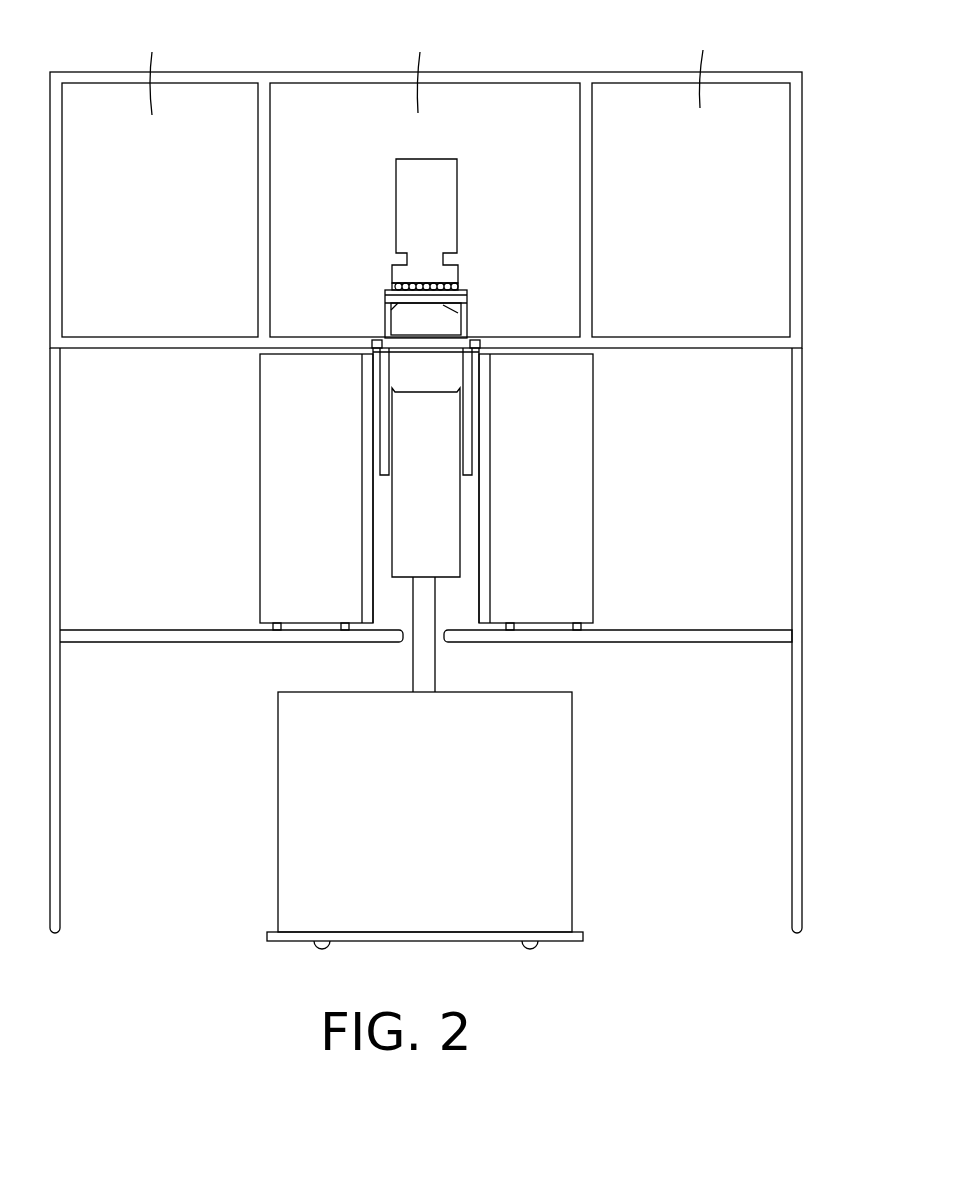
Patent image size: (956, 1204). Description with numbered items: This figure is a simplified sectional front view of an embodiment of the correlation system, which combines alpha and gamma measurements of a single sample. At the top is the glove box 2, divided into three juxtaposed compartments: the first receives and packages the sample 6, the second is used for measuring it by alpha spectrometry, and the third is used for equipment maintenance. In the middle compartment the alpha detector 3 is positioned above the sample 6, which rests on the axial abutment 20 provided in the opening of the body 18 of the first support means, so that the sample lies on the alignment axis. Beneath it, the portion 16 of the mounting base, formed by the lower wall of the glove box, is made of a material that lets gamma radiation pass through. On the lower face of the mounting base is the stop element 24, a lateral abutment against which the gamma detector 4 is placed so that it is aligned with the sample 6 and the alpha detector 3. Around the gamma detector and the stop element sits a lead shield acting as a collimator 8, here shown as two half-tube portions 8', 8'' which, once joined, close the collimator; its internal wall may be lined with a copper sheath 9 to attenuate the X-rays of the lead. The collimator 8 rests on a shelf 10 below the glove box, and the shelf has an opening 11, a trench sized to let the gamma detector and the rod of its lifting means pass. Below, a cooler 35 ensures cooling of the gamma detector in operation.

The glove box 2 is at (816, 100).
The alpha detector 3 is at (447, 190).
The sample 6 is at (463, 309).
The body 18 is at (467, 315).
The axial abutment 20 is at (385, 310).
The portion of the mounting base 16 is at (425, 342).
The stop element 24 is at (480, 397).
The gamma detector 4 is at (400, 527).
The collimator portion 8' is at (269, 492).
The collimator portion 8'' is at (573, 492).
The collimator 8 is at (651, 537).
The sheath 9 is at (490, 605).
The shelf 10 is at (695, 645).
The opening 11 is at (445, 648).
The cooler 35 is at (560, 885).